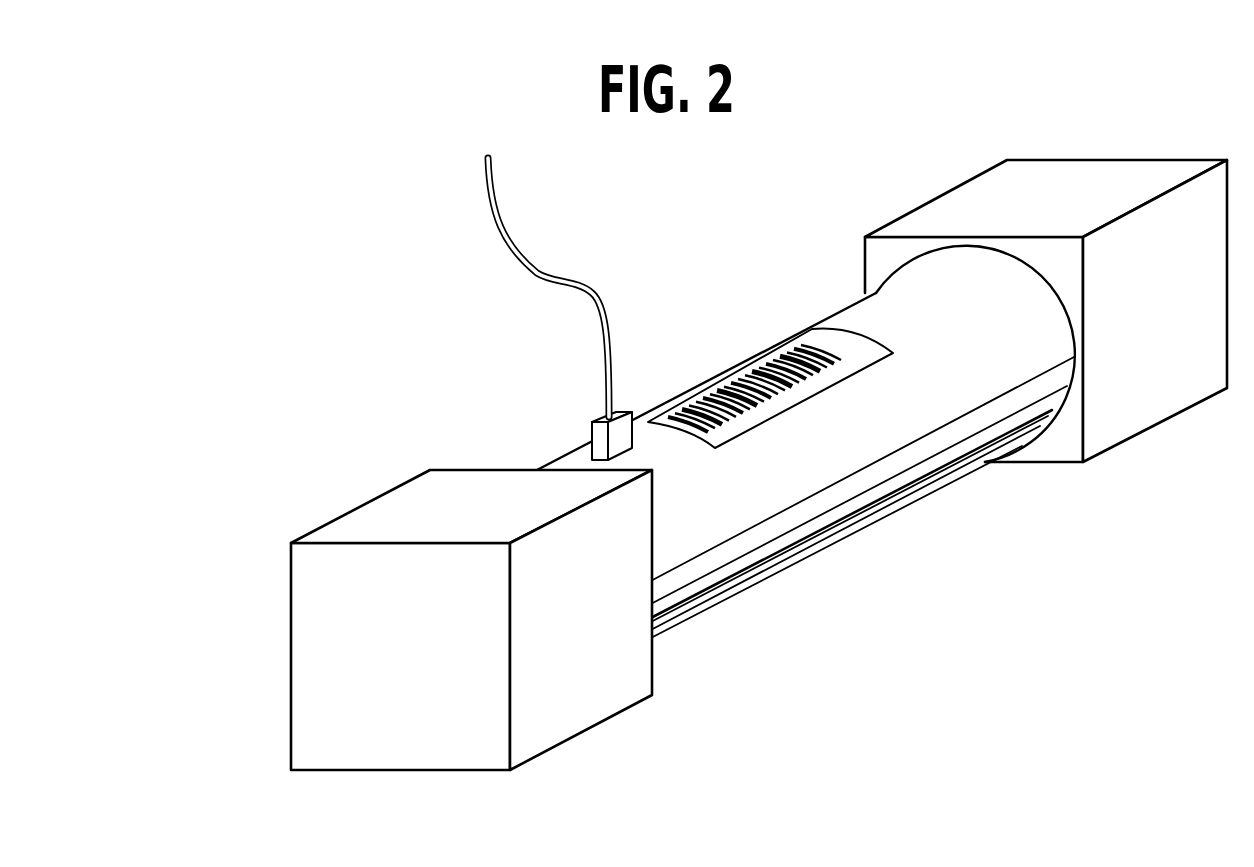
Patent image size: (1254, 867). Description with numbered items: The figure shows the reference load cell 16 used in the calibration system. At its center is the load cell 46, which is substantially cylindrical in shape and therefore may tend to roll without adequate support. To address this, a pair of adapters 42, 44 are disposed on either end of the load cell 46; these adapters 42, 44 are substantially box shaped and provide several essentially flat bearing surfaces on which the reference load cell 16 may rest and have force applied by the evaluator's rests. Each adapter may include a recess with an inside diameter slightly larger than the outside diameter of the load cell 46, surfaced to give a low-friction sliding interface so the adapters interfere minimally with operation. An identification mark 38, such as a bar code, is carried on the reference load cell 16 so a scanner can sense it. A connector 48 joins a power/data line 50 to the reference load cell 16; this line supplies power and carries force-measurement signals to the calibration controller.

The reference load cell 16 is at (803, 175).
The identification mark 38 is at (734, 377).
The adapter 42 is at (590, 678).
The adapter 44 is at (1143, 382).
The load cell 46 is at (820, 513).
The connector 48 is at (584, 418).
The power/data line 50 is at (600, 270).